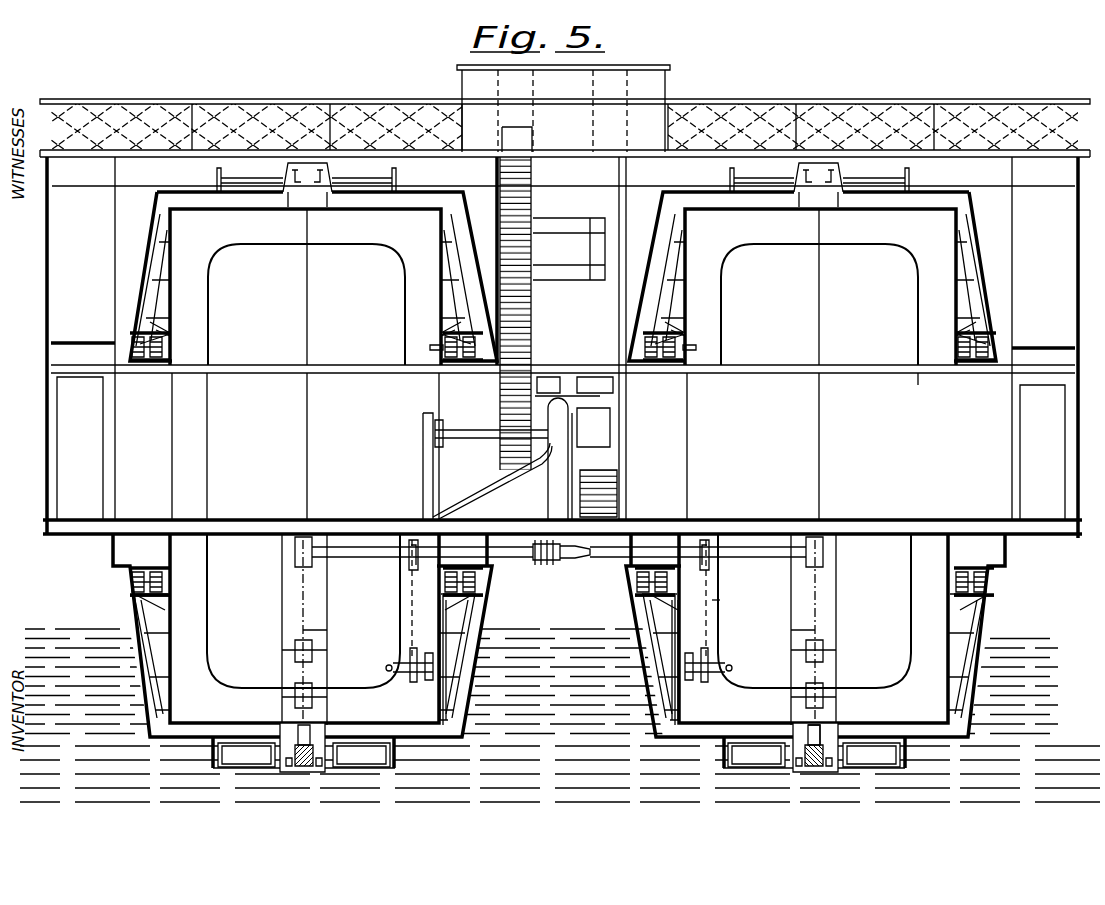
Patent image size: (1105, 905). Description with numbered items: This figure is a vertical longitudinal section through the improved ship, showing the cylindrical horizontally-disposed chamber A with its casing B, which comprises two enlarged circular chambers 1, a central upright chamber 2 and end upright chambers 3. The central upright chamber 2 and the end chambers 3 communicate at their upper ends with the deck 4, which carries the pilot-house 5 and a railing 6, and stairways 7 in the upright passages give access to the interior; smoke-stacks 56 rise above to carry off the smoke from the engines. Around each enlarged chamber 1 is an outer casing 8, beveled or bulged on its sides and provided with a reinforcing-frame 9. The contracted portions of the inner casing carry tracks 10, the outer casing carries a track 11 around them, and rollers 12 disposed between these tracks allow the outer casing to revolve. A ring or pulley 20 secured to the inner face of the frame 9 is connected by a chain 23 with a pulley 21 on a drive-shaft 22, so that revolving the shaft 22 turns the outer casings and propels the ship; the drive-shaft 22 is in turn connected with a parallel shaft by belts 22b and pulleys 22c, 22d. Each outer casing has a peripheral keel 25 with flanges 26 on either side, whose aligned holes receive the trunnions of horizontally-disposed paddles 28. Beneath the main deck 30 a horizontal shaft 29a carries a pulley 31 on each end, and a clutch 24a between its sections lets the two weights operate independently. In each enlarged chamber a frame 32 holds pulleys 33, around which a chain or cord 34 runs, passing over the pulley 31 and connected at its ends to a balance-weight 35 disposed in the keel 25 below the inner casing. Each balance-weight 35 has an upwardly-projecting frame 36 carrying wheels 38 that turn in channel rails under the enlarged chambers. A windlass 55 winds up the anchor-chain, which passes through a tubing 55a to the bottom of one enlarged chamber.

The enlarged circular chamber 1 is at (563, 287).
The central upright chamber 2 is at (588, 448).
The end upright chamber 3 is at (561, 448).
The deck 4 is at (742, 150).
The pilot-house 5 is at (563, 108).
The railing 6 is at (921, 102).
The stairway 7 is at (533, 190).
The outer casing 8 is at (190, 192).
The reinforcing-frame 9 is at (160, 284).
The track 10 is at (150, 363).
The track 11 is at (500, 602).
The roller 12 is at (130, 340).
The ring or pulley 20 is at (443, 347).
The pulley 21 is at (440, 618).
The drive-shaft 22 is at (385, 668).
The belt 22b is at (410, 610).
The pulley 22c is at (409, 546).
The pulley 22d is at (551, 704).
The chain 23 is at (714, 604).
The clutch 24a is at (555, 562).
The keel 25 is at (842, 798).
The peripheral flange 26 is at (935, 785).
The paddle 28 is at (561, 462).
The shaft 29a is at (348, 557).
The main deck 30 is at (760, 520).
The pulley 31 is at (295, 562).
The frame 32 is at (328, 612).
The pulley 33 is at (295, 650).
The chain or cord 34 is at (322, 632).
The balance-weight 35 is at (305, 772).
The frame 36 is at (822, 740).
The wheel 38 is at (283, 723).
The windlass 55 is at (495, 459).
The tubing 55a is at (486, 470).
The smoke-stack 56 is at (512, 66).
The cylindrical chamber A is at (916, 378).
The casing B is at (440, 303).